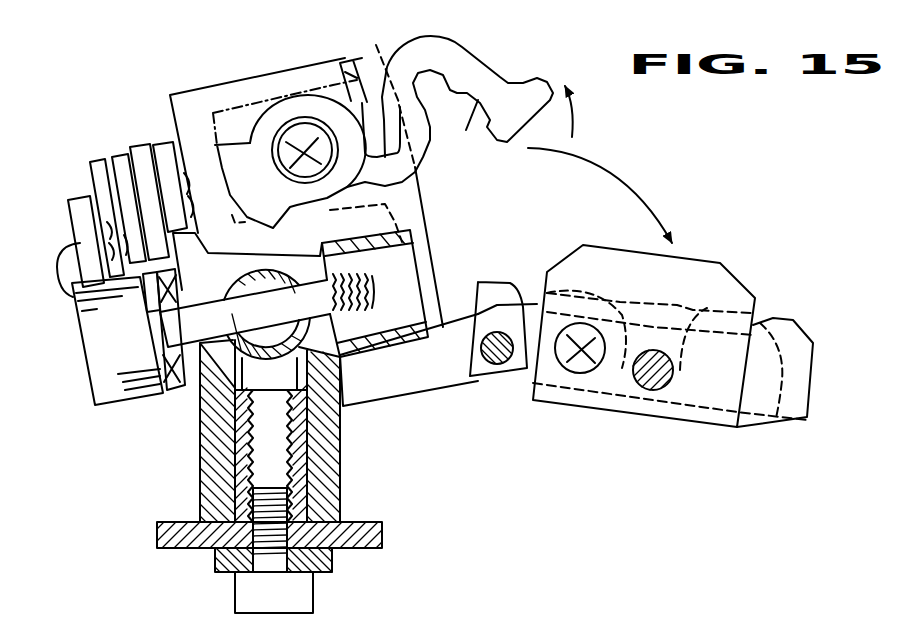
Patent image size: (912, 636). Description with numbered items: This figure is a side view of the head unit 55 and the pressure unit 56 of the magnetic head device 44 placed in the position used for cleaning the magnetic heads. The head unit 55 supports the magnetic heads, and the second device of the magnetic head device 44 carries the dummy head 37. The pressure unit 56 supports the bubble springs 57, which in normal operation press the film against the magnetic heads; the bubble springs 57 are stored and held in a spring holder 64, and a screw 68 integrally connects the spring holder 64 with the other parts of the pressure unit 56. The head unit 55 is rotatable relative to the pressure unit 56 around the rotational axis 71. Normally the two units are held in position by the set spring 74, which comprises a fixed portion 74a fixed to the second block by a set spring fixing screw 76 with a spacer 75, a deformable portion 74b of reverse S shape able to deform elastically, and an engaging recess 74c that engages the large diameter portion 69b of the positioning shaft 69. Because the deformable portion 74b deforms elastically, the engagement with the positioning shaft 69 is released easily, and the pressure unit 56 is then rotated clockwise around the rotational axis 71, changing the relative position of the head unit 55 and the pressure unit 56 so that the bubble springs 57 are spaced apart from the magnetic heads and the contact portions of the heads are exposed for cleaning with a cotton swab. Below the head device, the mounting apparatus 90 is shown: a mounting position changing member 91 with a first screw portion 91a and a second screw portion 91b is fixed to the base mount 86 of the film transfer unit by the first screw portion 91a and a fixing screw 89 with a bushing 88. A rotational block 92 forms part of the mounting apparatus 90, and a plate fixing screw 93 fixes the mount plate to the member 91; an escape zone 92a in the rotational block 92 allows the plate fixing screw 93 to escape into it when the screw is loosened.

The magnetic head device 44 is at (126, 117).
The set spring 74 is at (374, 128).
The fixed portion 74a is at (290, 107).
The deformable portion 74b is at (505, 80).
The engaging recess 74c is at (462, 136).
The dummy head 37 is at (362, 80).
The head unit 55 is at (436, 206).
The set spring fixing screw 76 is at (273, 155).
The spacer 75 is at (292, 170).
The second screw portion 91b is at (394, 281).
The escape zone 92a is at (223, 307).
The rotational block 92 is at (328, 360).
The mounting apparatus 90 is at (275, 431).
The mounting position changing member 91 is at (340, 480).
The first screw portion 91a is at (318, 443).
The plate fixing screw 93 is at (98, 360).
The base mount 86 is at (174, 522).
The bushing 88 is at (334, 563).
The fixing screw 89 is at (244, 594).
The rotational axis 71 is at (497, 367).
The pressure unit 56 is at (687, 350).
The bubble springs 57 is at (582, 293).
The screw 68 is at (578, 373).
The large diameter portion 69b is at (653, 392).
The positioning shaft 69 is at (661, 425).
The spring holder 64 is at (787, 408).